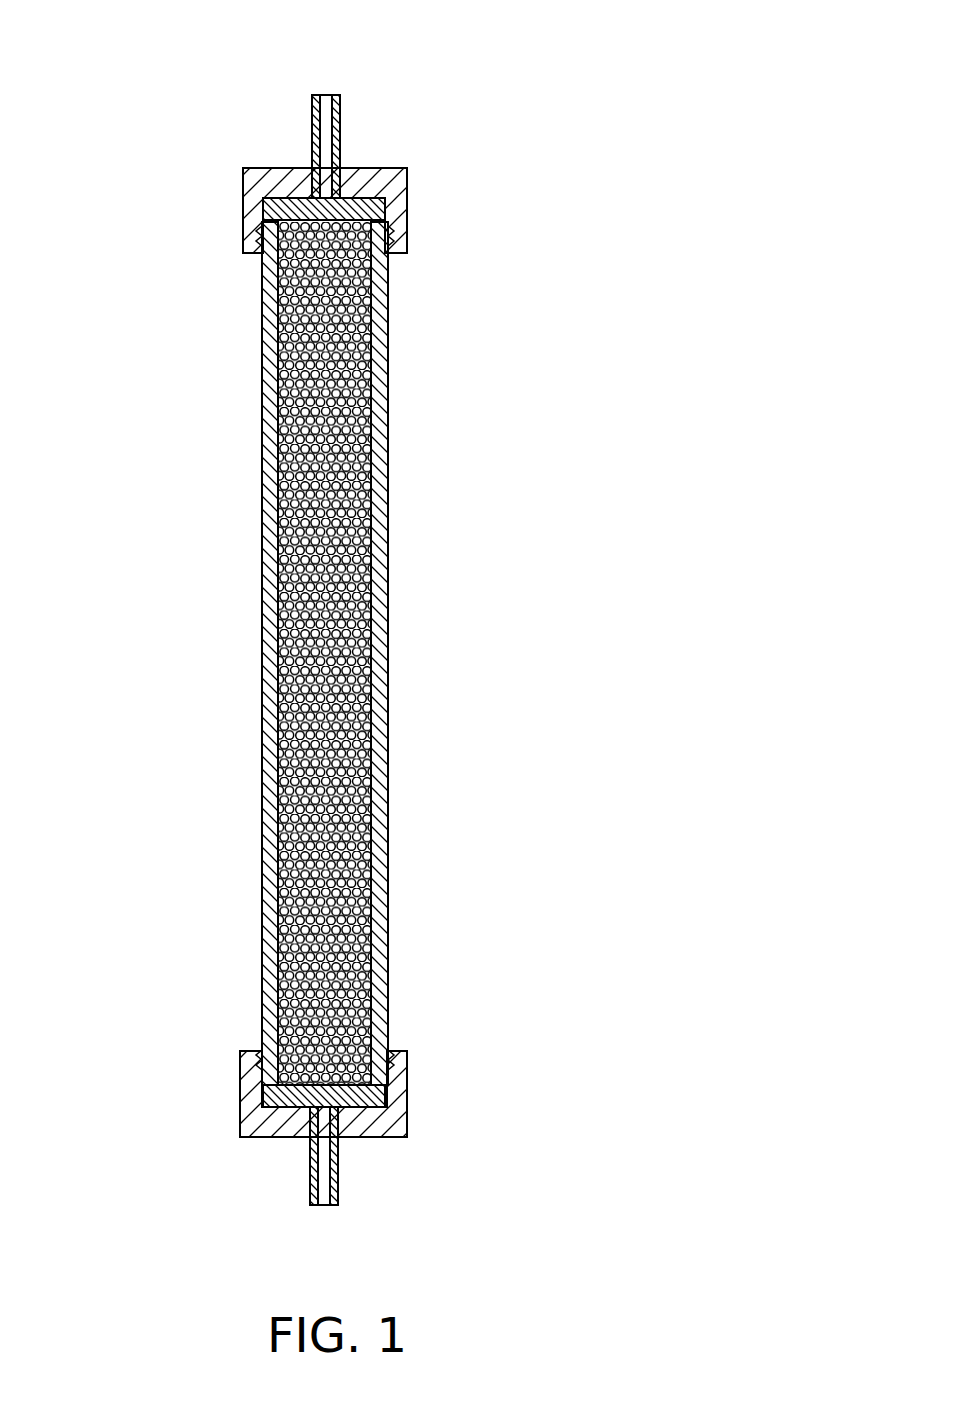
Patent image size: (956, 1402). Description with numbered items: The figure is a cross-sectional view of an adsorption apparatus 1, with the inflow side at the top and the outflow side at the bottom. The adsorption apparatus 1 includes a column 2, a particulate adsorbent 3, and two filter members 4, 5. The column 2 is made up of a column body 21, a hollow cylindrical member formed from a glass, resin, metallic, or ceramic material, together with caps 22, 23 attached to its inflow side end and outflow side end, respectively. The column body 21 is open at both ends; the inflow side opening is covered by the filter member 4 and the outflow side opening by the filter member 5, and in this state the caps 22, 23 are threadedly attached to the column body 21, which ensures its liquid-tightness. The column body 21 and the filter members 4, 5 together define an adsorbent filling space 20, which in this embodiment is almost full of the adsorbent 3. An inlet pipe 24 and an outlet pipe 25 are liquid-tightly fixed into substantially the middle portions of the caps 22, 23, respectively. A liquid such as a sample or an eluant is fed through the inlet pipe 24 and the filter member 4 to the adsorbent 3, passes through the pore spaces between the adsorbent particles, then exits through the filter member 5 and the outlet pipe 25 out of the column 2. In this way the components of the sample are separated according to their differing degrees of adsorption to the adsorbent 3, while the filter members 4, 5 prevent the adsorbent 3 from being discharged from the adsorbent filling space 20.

The adsorption apparatus 1 is at (495, 119).
The column 2 is at (414, 465).
The adsorbent 3 is at (348, 372).
The filter member 4 is at (372, 212).
The filter member 5 is at (378, 1092).
The adsorbent filling space 20 is at (386, 332).
The column body 21 is at (385, 590).
The cap 22 is at (272, 180).
The cap 23 is at (365, 1122).
The inlet pipe 24 is at (338, 136).
The outlet pipe 25 is at (312, 1175).